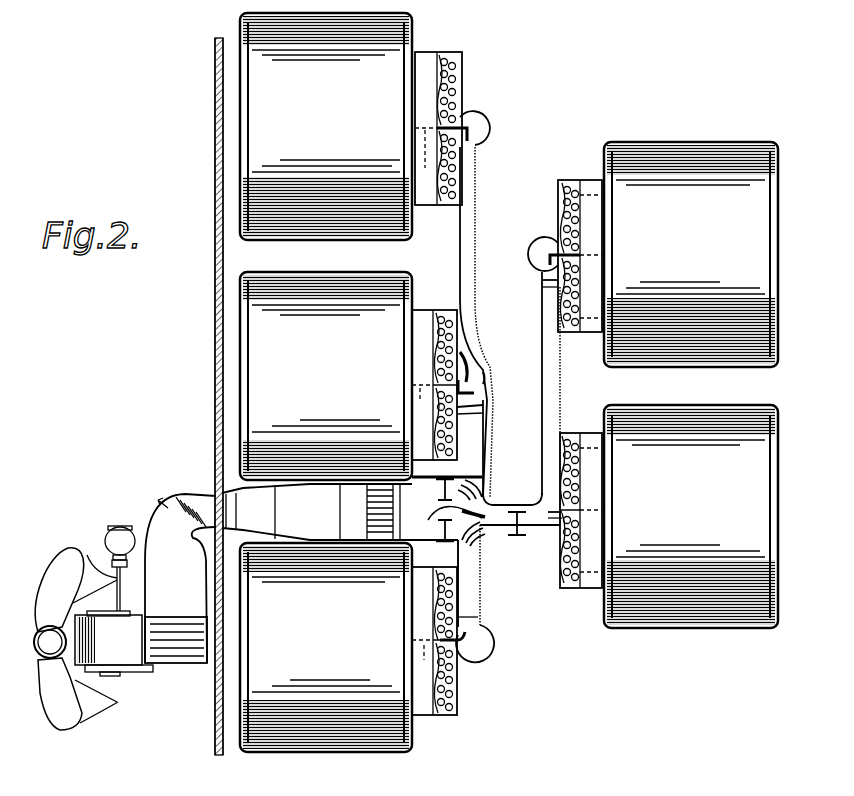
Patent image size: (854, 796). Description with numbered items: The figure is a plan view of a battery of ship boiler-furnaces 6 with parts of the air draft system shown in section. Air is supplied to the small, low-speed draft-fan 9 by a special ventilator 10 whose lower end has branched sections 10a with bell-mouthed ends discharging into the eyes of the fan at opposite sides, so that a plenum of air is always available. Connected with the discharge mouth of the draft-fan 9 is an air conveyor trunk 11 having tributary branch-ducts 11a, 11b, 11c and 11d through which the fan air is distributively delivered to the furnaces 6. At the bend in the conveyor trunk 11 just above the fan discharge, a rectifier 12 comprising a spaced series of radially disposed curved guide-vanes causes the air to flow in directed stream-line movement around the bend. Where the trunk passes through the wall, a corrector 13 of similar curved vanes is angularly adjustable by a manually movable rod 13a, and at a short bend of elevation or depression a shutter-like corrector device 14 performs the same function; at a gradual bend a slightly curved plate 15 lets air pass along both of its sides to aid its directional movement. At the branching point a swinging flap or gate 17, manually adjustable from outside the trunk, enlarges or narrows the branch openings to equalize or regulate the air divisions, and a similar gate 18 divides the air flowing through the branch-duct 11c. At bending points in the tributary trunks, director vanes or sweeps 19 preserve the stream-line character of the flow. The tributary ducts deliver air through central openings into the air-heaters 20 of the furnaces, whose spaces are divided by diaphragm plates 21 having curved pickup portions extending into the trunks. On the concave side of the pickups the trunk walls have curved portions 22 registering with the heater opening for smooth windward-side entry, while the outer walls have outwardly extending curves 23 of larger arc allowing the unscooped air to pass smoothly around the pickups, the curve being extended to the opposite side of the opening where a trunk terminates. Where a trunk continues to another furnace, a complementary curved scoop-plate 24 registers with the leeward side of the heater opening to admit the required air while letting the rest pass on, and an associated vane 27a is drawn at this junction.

The ship boiler-furnace 6 is at (779, 493).
The draft-fan 9 is at (134, 666).
The special ventilator 10 is at (50, 655).
The branched section 10a is at (90, 730).
The air conveyor trunk 11 is at (355, 486).
The branch-duct 11a is at (481, 603).
The branch-duct 11b is at (485, 428).
The branch-duct 11c is at (500, 528).
The branch-duct 11d is at (558, 376).
The rectifier 12 is at (187, 662).
The corrector 13 is at (180, 496).
The manually movable rod 13a is at (151, 492).
The corrector device 14 is at (243, 514).
The curved plate 15 is at (305, 541).
The swinging flap or gate 17 is at (440, 510).
The gate 18 is at (520, 540).
The director vane or sweep 19 is at (468, 477).
The air-heater 20 is at (462, 73).
The diaphragm plate 21 is at (509, 384).
The curved wall portion 22 is at (478, 158).
The outwardly extending curve 23 is at (490, 122).
The curved scoop-plate 24 is at (471, 366).
The vane 27a is at (487, 373).